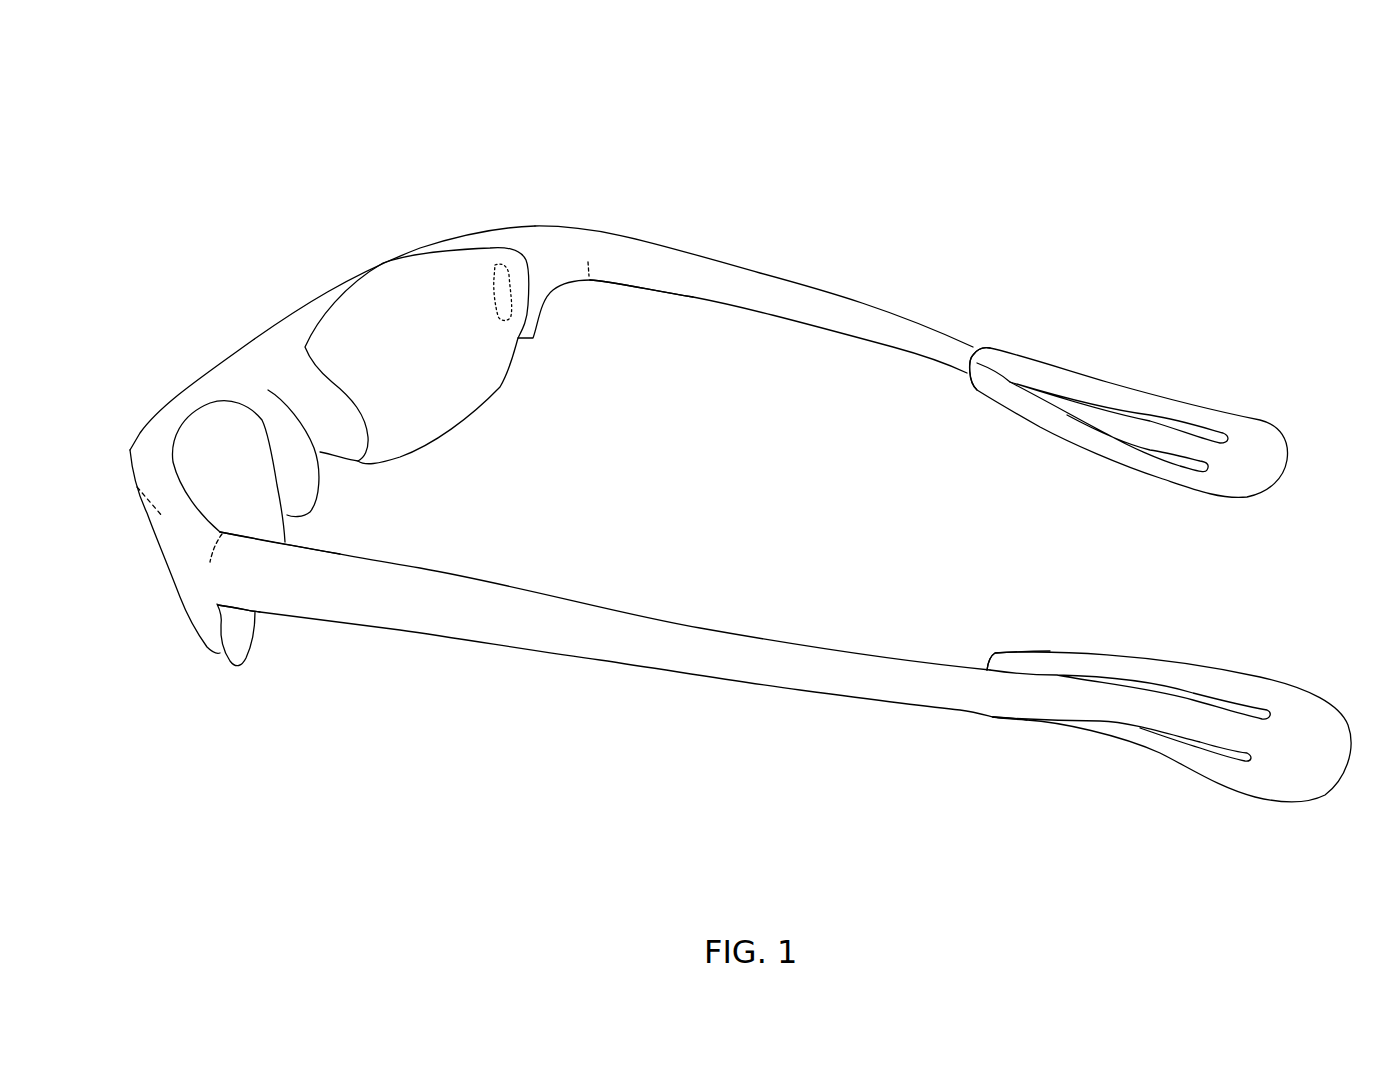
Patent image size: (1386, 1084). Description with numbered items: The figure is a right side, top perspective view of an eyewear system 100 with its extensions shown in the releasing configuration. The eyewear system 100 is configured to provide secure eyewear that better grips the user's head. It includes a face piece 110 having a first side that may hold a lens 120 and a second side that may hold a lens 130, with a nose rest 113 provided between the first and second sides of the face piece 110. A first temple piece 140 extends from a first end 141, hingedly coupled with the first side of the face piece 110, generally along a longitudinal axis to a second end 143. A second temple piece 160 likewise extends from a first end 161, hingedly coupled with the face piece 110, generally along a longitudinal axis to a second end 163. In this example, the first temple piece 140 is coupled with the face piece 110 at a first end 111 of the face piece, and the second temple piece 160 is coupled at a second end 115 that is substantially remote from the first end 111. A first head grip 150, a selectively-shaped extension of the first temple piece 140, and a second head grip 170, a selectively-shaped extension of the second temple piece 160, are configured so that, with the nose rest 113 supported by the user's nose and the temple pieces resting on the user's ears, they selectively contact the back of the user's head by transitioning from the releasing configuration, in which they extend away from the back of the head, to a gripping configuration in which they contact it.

The eyewear system 100 is at (204, 122).
The face piece 110 is at (232, 308).
The first end 111 is at (535, 227).
The nose rest 113 is at (378, 491).
The second end 115 is at (190, 590).
The lens 120 is at (403, 308).
The lens 130 is at (205, 460).
The first temple piece 140 is at (788, 252).
The first end 141 is at (620, 283).
The second end 143 is at (1005, 297).
The first head grip 150 is at (1190, 367).
The second temple piece 160 is at (713, 720).
The first end 161 is at (237, 573).
The second end 163 is at (993, 778).
The second head grip 170 is at (1133, 798).